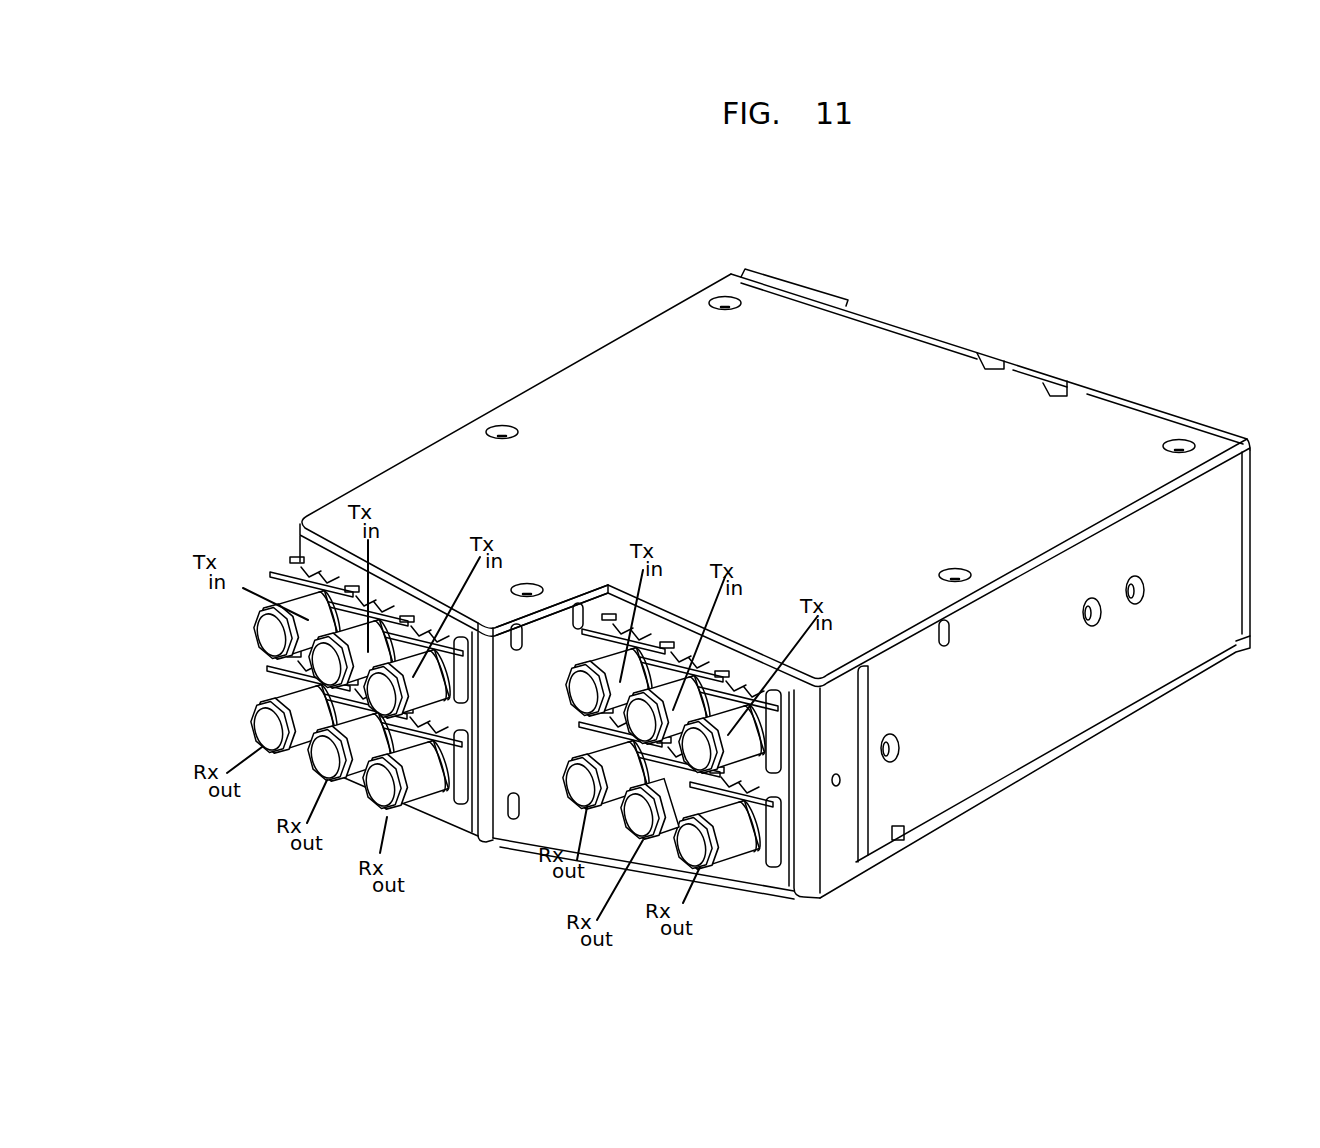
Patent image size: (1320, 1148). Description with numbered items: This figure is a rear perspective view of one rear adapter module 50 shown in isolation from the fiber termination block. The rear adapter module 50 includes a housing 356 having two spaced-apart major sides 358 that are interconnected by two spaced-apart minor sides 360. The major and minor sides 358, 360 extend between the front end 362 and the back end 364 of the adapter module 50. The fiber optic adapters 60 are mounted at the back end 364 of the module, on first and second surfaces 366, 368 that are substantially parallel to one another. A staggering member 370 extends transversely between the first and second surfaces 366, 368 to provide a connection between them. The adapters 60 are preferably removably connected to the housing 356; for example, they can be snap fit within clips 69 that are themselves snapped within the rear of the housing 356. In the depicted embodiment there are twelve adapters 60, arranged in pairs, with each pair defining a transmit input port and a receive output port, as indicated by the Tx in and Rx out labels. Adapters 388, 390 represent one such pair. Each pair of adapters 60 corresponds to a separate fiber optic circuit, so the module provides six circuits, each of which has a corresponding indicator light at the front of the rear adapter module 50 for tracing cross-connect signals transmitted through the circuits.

The rear adapter module 50 is at (566, 322).
The housing 356 is at (1017, 552).
The major sides 358 is at (836, 462).
The minor sides 360 is at (493, 405).
The front end 362 is at (1122, 392).
The back end 364 is at (467, 820).
The first surface 366 is at (478, 640).
The second surface 368 is at (737, 667).
The staggering member 370 is at (553, 617).
The adapter 388 is at (598, 697).
The adapter 390 is at (613, 760).
The fiber optic adapters 60 is at (303, 705).
The clips 69 is at (403, 632).